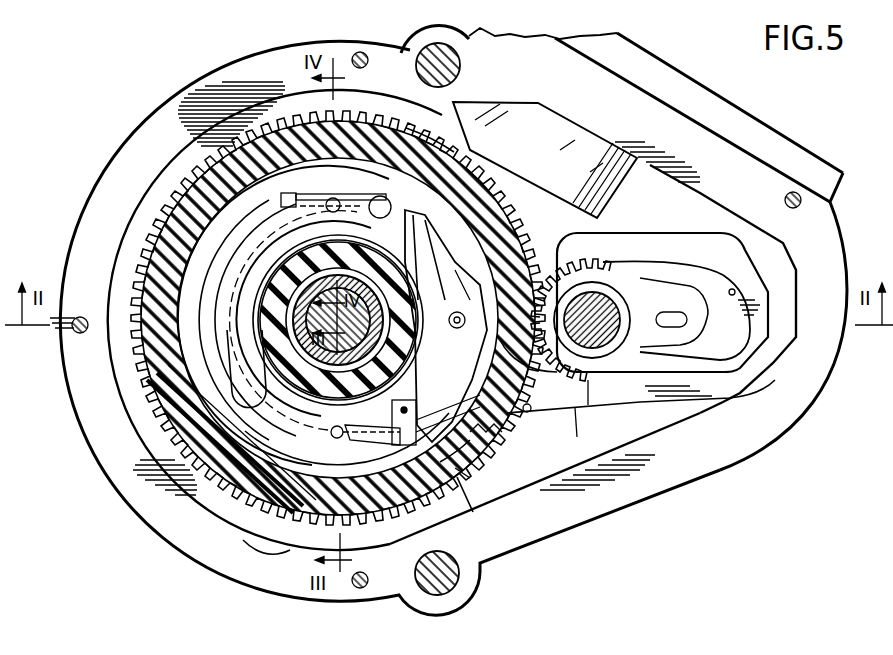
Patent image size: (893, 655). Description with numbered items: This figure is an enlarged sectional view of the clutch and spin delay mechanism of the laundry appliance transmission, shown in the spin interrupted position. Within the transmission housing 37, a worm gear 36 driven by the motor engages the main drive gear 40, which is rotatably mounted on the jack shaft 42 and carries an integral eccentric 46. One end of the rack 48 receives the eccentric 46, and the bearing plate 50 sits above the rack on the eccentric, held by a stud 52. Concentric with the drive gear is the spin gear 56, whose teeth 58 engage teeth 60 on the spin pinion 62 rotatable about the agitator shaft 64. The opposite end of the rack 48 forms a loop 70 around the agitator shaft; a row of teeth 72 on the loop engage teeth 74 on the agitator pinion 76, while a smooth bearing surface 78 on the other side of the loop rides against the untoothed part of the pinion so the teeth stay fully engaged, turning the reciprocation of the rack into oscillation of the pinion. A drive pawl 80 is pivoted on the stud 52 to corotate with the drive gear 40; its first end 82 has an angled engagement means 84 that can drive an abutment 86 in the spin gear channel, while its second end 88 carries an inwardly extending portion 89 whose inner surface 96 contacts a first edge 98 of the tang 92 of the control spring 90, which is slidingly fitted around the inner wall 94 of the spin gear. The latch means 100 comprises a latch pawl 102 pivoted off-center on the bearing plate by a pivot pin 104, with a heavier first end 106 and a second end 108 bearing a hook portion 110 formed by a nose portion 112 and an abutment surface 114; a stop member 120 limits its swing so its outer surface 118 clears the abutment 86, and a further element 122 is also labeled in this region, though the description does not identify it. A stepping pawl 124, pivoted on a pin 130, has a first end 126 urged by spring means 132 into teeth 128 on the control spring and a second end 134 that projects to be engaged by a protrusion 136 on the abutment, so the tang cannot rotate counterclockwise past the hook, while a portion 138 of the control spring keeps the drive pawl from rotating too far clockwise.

The worm gear 36 is at (610, 192).
The transmission housing 37 is at (805, 405).
The main drive gear 40 is at (165, 423).
The jack shaft 42 is at (245, 320).
The eccentric 46 is at (493, 458).
The rack 48 is at (576, 437).
The bearing plate 50 is at (268, 414).
The stud 52 is at (453, 353).
The spin gear 56 is at (197, 177).
The teeth 58 is at (529, 411).
The teeth 60 is at (590, 395).
The spin pinion 62 is at (572, 262).
The agitator shaft 64 is at (627, 360).
The loop 70 is at (735, 290).
The teeth 72 is at (653, 257).
The teeth 74 is at (678, 296).
The agitator pinion 76 is at (680, 346).
The smooth bearing surface 78 is at (680, 385).
The drive pawl 80 is at (523, 370).
The first end 82 is at (475, 192).
The engagement means 84 is at (388, 200).
The abutment 86 is at (422, 512).
The second end 88 is at (502, 432).
The inwardly extending portion 89 is at (447, 367).
The control spring 90 is at (397, 400).
The tang 92 is at (280, 212).
The inner wall 94 is at (455, 297).
The inner surface 96 is at (437, 413).
The first edge 98 is at (225, 272).
The latch means 100 is at (163, 213).
The latch pawl 102 is at (222, 298).
The pivot pin 104 is at (286, 193).
The first end 106 is at (222, 357).
The second end 108 is at (338, 200).
The hook portion 110 is at (425, 150).
The nose portion 112 is at (433, 240).
The abutment surface 114 is at (330, 194).
The outer surface 118 is at (188, 186).
The stop member 120 is at (258, 125).
The lever arm portion 122 is at (440, 270).
The stepping pawl 124 is at (293, 437).
The first end 126 is at (273, 423).
The teeth 128 is at (240, 378).
The pin 130 is at (330, 443).
The spring means 132 is at (463, 468).
The second end 134 is at (462, 485).
The protrusion 136 is at (243, 540).
The portion 138 is at (452, 317).